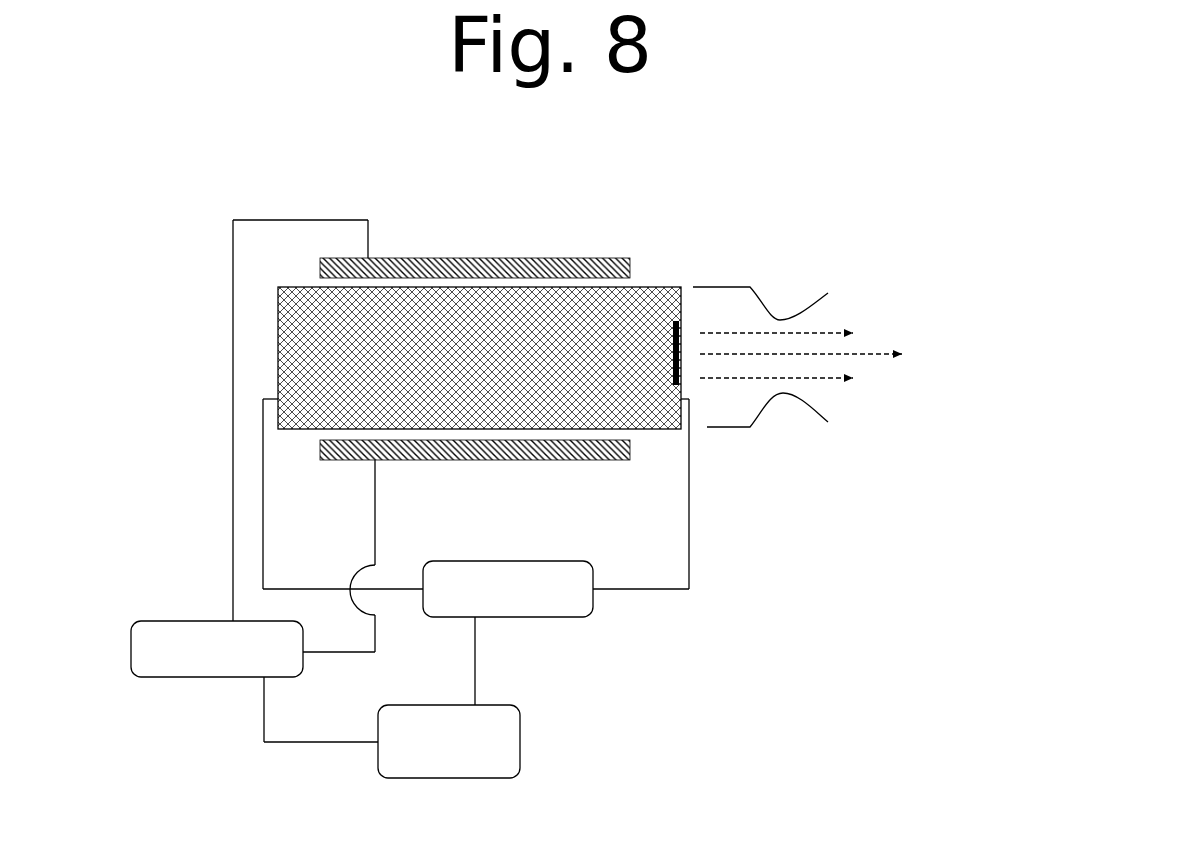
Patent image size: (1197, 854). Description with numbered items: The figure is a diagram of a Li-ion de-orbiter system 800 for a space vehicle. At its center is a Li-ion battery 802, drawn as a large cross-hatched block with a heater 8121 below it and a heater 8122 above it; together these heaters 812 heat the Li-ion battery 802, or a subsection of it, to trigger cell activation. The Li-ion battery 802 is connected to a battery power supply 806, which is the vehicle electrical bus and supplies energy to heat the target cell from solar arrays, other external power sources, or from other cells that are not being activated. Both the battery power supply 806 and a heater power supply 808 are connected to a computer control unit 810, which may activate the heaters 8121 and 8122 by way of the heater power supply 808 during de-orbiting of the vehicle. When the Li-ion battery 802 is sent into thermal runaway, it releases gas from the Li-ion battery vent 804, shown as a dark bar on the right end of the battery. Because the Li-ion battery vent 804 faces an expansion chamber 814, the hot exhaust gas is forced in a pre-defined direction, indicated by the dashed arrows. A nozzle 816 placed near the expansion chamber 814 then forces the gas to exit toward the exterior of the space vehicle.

The Li-ion de-orbiter system 800 is at (1047, 136).
The Li-ion battery 802 is at (521, 349).
The Li-ion battery vent 804 is at (669, 373).
The battery power supply 806 is at (508, 589).
The heater power supply 808 is at (217, 649).
The computer control unit 810 is at (449, 741).
The heaters 812 is at (458, 362).
The heater 8121 is at (352, 461).
The heater 8122 is at (431, 256).
The expansion chamber 814 is at (707, 313).
The nozzle 816 is at (788, 403).